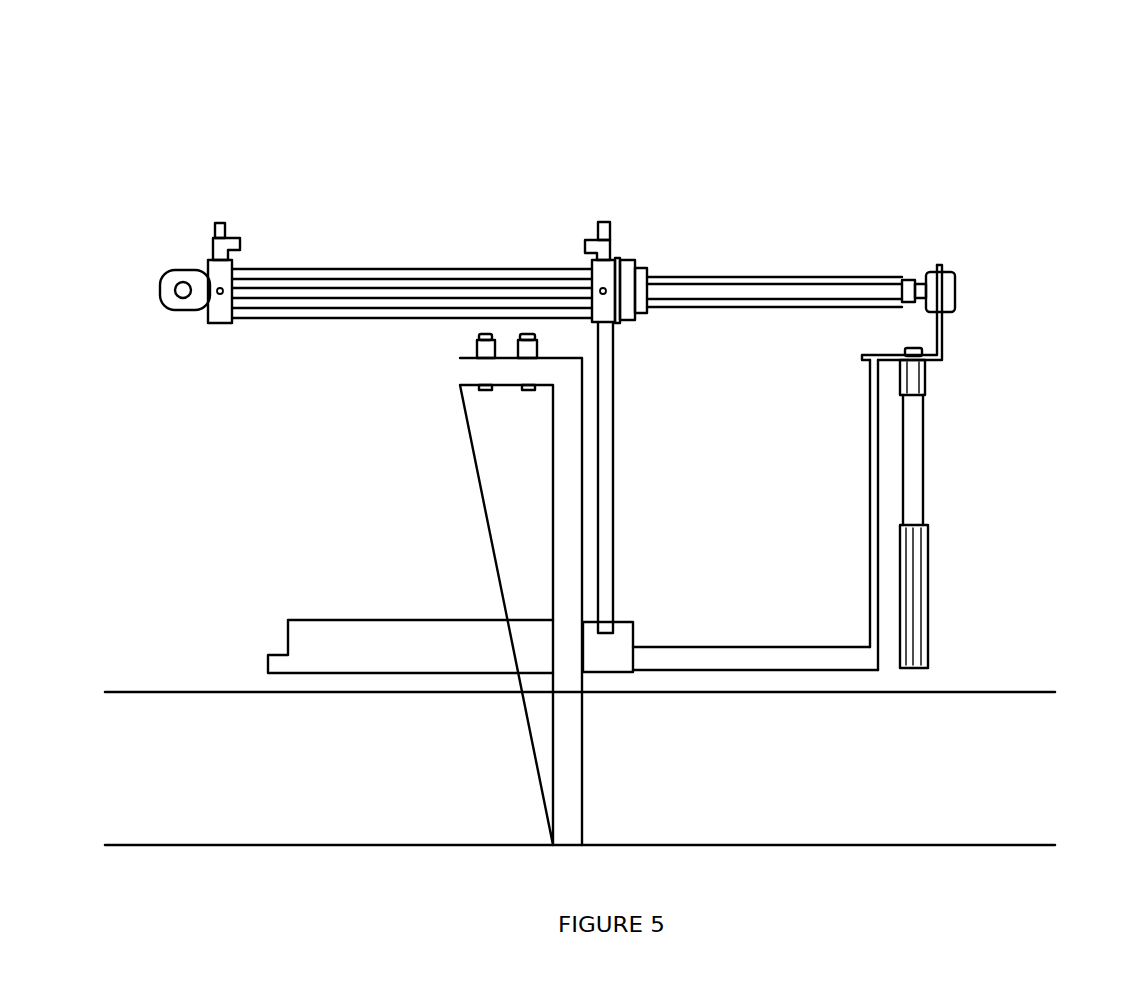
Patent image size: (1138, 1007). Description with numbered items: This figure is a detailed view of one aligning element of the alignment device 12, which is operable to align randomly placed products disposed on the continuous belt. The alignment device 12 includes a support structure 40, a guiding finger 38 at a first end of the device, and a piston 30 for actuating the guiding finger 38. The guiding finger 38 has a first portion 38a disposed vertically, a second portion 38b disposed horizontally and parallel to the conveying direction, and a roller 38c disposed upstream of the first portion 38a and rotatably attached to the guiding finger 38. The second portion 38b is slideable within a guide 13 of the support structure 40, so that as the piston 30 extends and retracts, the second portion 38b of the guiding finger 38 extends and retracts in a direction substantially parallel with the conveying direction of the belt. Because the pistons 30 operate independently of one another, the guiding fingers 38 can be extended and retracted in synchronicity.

The alignment device 12 is at (503, 122).
The piston 30 is at (723, 290).
The support structure 40 is at (565, 493).
The guide 13 is at (478, 640).
The guiding finger 38 is at (820, 668).
The first portion 38a is at (868, 469).
The second portion 38b is at (743, 645).
The roller 38c is at (912, 570).